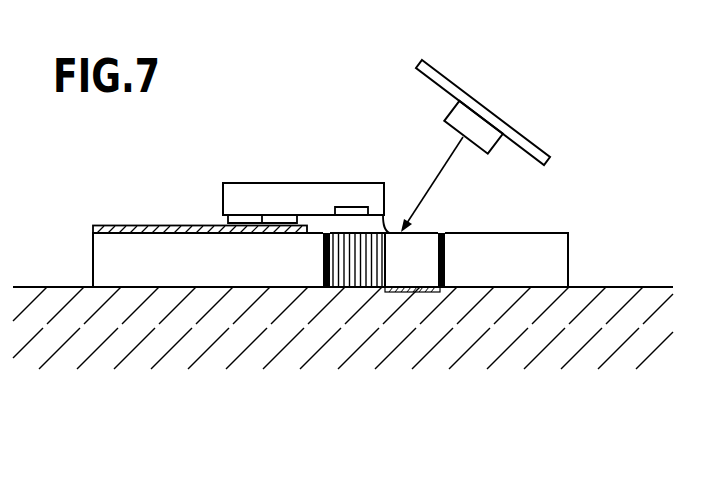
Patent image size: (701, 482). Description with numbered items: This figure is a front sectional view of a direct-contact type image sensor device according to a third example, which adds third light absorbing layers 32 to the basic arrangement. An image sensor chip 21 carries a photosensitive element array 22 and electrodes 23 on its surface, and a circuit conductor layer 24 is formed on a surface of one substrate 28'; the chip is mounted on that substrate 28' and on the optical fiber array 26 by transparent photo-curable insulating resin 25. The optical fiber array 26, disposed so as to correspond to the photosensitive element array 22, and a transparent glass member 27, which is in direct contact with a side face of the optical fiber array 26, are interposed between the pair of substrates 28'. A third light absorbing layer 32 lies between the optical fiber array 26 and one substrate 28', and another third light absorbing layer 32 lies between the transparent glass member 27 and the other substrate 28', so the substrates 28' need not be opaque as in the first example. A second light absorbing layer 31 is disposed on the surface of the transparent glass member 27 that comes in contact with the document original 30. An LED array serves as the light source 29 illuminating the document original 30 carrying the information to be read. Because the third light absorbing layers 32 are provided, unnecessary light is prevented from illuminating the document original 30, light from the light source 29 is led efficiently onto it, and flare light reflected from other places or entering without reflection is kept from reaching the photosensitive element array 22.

The image sensor chip 21 is at (268, 187).
The photosensitive element array 22 is at (358, 210).
The electrodes 23 is at (278, 220).
The circuit conductor layer 24 is at (135, 227).
The transparent photo-curable insulating resin 25 is at (325, 223).
The optical fiber array 26 is at (362, 288).
The transparent glass member 27 is at (427, 272).
The substrates 28' is at (333, 258).
The light source (LED array) 29 is at (463, 96).
The document original 30 is at (120, 323).
The second light absorbing layer 31 is at (400, 292).
The third light absorbing layers 32 is at (325, 288).